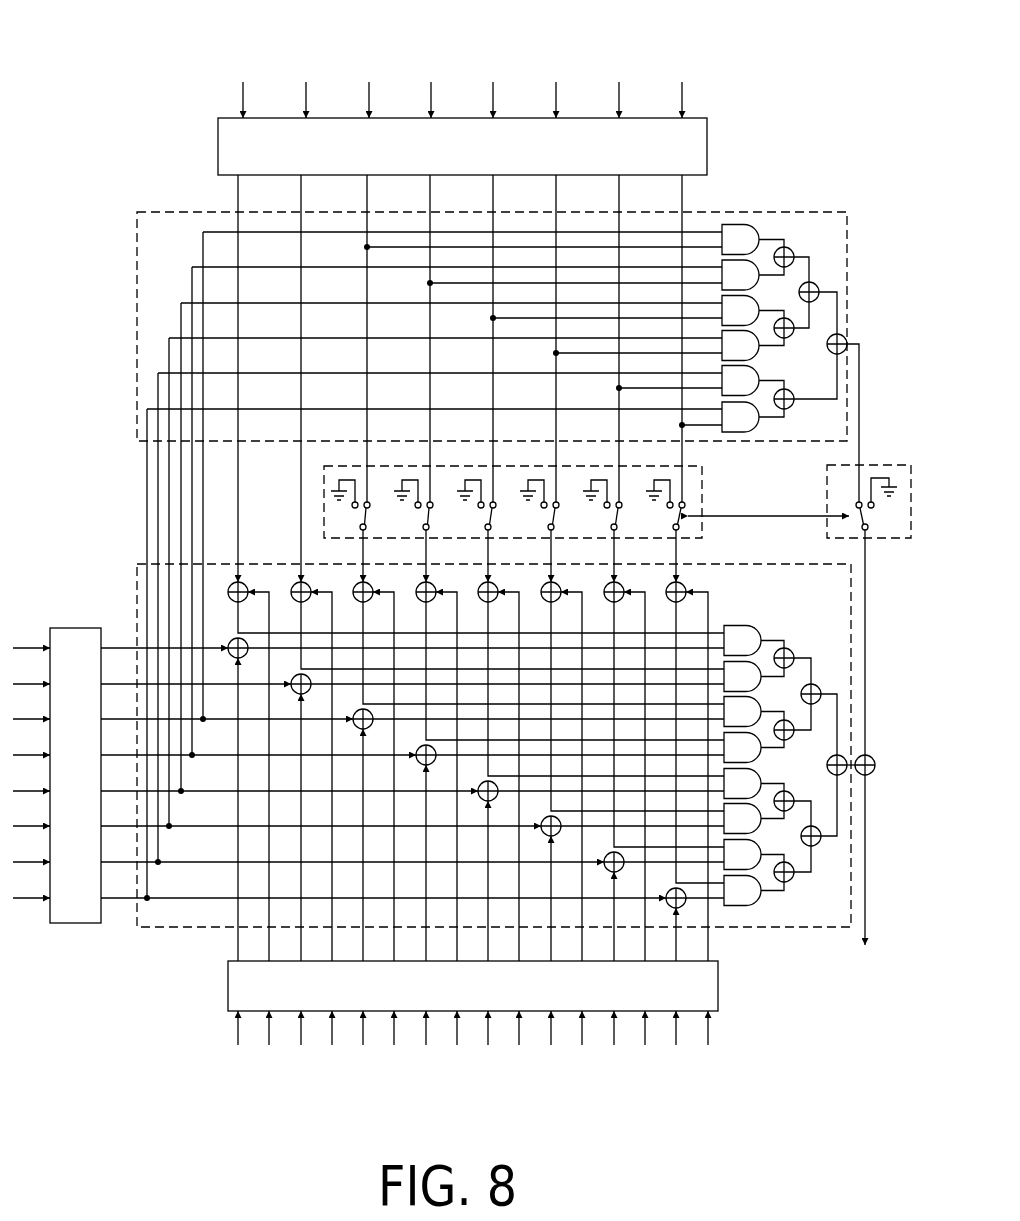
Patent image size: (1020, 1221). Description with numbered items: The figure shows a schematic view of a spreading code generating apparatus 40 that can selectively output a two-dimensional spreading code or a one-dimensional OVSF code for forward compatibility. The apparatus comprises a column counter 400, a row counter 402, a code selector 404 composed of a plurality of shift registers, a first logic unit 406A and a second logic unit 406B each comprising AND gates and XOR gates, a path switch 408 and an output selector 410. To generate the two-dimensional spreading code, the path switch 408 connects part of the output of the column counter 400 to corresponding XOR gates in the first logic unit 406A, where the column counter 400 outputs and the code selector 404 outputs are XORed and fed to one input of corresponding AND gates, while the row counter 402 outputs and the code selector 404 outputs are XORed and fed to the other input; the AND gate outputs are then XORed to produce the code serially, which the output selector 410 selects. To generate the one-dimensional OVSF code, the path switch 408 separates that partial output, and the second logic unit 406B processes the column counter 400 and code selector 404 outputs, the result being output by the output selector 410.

The spreading code generating apparatus 40 is at (222, 28).
The column counter 400 is at (218, 146).
The row counter 402 is at (72, 925).
The code selector 404 is at (238, 987).
The first logic unit 406A is at (765, 928).
The second logic unit 406B is at (808, 210).
The path switch 408 is at (702, 528).
The output selector 410 is at (827, 481).